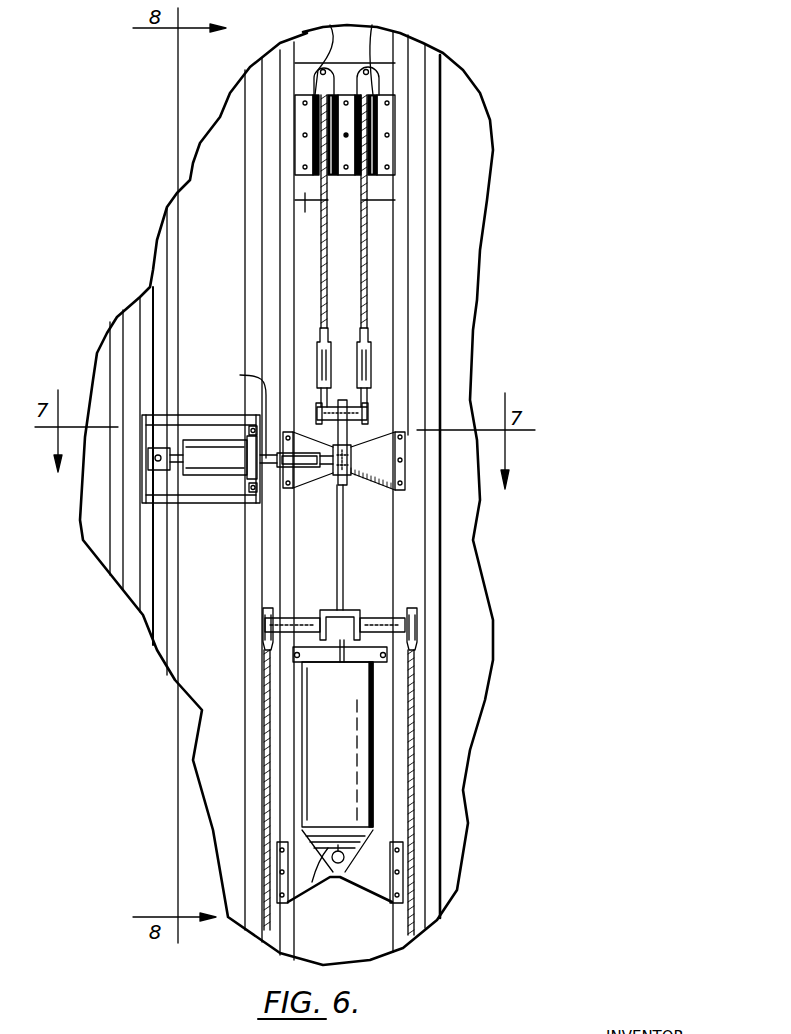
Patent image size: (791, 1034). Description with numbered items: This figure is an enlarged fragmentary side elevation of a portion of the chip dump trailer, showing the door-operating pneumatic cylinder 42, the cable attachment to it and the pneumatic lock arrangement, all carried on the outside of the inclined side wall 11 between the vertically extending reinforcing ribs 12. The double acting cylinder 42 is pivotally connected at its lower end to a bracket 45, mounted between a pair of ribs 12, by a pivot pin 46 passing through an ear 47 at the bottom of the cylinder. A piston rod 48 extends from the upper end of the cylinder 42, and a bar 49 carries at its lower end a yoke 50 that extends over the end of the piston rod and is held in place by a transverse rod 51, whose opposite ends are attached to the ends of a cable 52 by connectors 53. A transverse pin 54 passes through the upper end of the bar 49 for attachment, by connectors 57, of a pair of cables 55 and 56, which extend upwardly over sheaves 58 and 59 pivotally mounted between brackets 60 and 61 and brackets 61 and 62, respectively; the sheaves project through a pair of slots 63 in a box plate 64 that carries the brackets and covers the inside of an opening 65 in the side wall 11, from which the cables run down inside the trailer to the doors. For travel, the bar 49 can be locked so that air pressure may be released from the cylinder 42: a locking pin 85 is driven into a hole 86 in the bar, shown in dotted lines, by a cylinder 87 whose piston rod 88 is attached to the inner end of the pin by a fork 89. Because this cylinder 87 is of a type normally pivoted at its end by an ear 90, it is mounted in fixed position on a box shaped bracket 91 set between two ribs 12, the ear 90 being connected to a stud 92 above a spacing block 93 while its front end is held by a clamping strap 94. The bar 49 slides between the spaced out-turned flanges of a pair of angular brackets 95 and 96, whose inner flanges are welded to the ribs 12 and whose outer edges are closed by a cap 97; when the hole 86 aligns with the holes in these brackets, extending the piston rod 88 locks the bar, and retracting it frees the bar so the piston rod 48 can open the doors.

The side wall 11 is at (230, 112).
The ribs 12 is at (423, 228).
The pneumatic cylinder 42 is at (318, 771).
The bracket 45 is at (366, 895).
The pivot pin 46 is at (344, 862).
The ear 47 is at (317, 884).
The piston rod 48 is at (342, 648).
The bar 49 is at (341, 566).
The yoke 50 is at (358, 612).
The transverse rod 51 is at (300, 620).
The cable 52 is at (264, 750).
The connectors 53 is at (245, 678).
The transverse pin 54 is at (353, 410).
The cable 55 is at (321, 248).
The cable 56 is at (368, 290).
The connectors 57 is at (317, 358).
The sheave 58 is at (327, 73).
The sheave 59 is at (377, 73).
The bracket 60 is at (297, 127).
The bracket 61 is at (343, 178).
The bracket 62 is at (388, 175).
The slots 63 is at (349, 49).
The box plate 64 is at (395, 75).
The opening 65 is at (388, 204).
The locking pin 85 is at (315, 468).
The hole 86 is at (341, 478).
The cylinder 87 is at (227, 447).
The piston rod 88 is at (240, 410).
The fork 89 is at (277, 480).
The ear 90 is at (177, 452).
The box shaped bracket 91 is at (195, 487).
The stud 92 is at (158, 458).
The spacing block 93 is at (154, 470).
The clamping strap 94 is at (245, 483).
The angular bracket 95 is at (298, 492).
The angular bracket 96 is at (388, 472).
The cap 97 is at (341, 480).